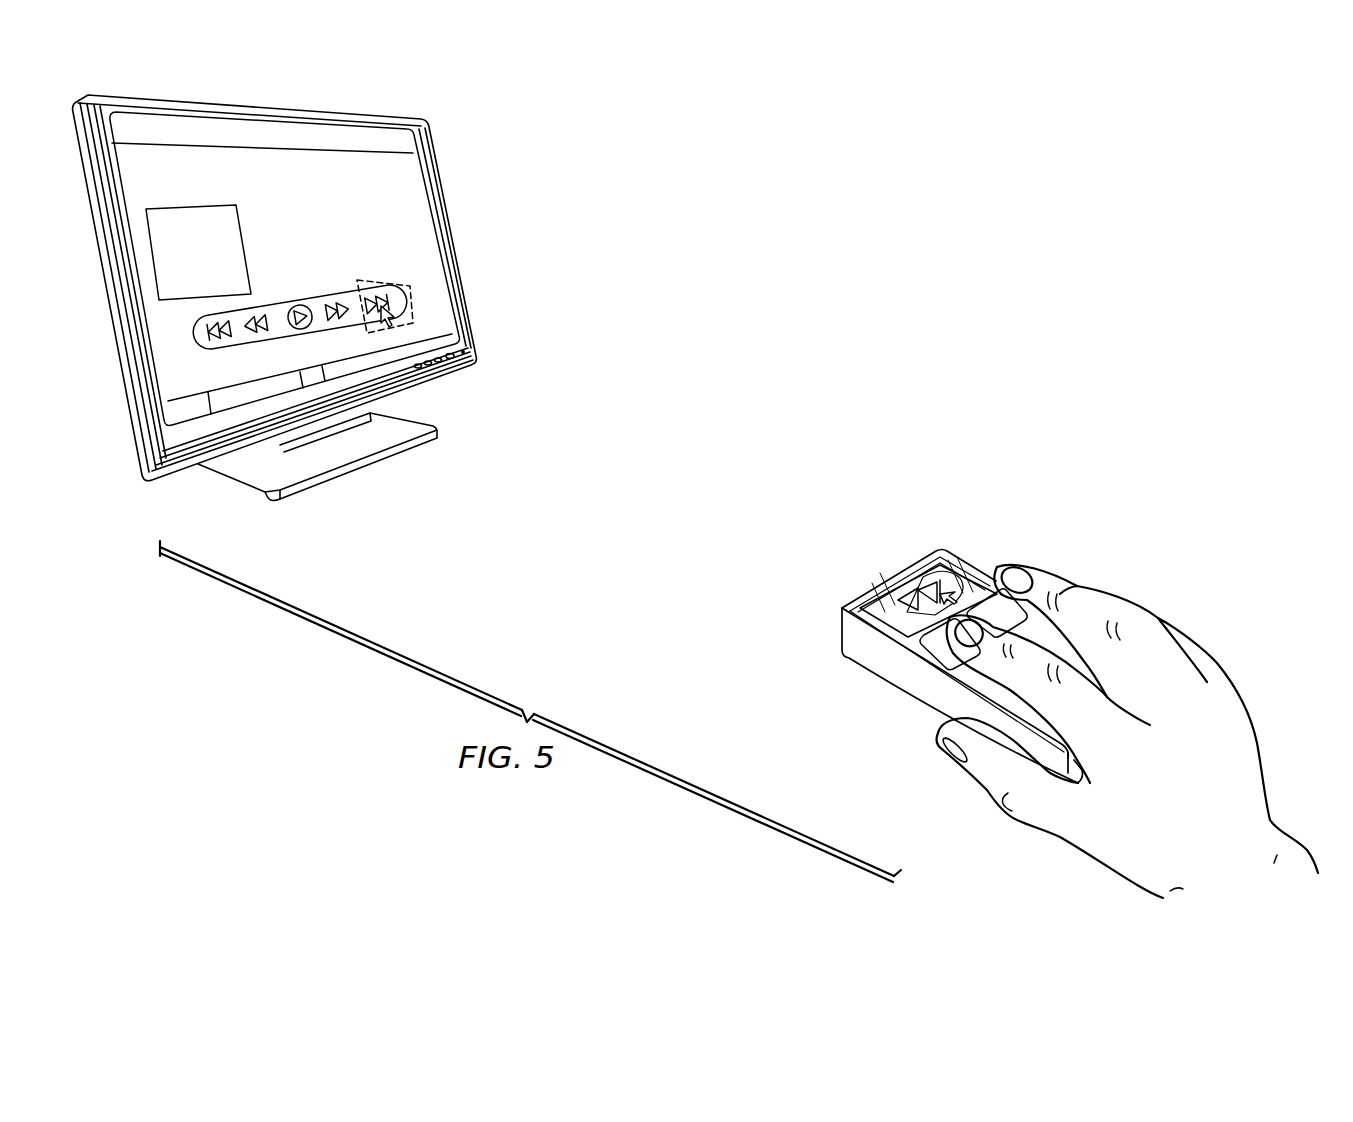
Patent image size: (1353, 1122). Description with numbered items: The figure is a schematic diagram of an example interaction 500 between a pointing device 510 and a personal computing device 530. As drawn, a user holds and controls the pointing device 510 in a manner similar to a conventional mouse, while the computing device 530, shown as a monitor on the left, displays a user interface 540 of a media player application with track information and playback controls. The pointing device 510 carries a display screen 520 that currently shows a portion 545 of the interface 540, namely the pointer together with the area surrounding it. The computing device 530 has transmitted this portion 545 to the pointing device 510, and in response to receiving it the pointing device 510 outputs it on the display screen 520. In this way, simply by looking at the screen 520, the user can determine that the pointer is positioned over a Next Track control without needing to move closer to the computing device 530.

The interaction 500 is at (764, 180).
The pointing device 510 is at (840, 633).
The display screen 520 is at (968, 587).
The computing device 530 is at (428, 133).
The user interface 540 is at (410, 190).
The portion 545 is at (407, 284).